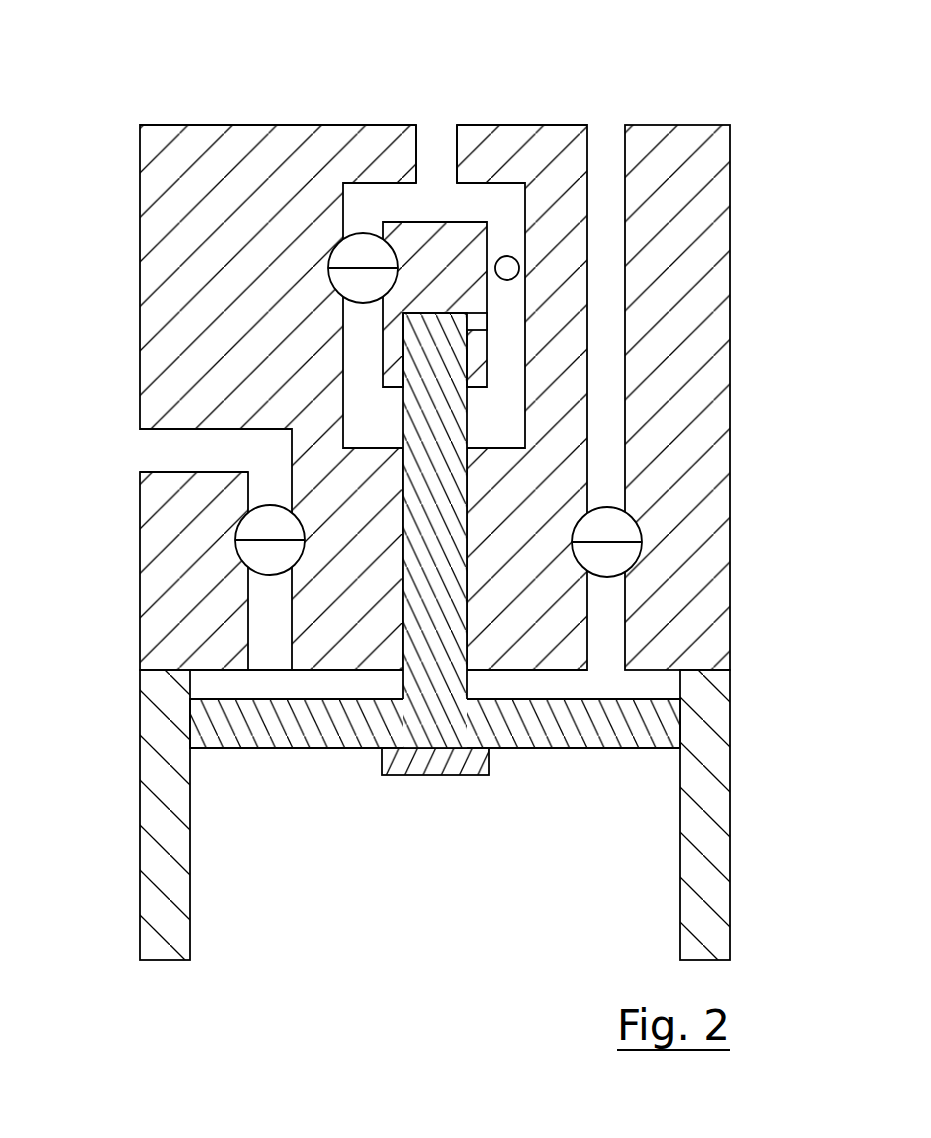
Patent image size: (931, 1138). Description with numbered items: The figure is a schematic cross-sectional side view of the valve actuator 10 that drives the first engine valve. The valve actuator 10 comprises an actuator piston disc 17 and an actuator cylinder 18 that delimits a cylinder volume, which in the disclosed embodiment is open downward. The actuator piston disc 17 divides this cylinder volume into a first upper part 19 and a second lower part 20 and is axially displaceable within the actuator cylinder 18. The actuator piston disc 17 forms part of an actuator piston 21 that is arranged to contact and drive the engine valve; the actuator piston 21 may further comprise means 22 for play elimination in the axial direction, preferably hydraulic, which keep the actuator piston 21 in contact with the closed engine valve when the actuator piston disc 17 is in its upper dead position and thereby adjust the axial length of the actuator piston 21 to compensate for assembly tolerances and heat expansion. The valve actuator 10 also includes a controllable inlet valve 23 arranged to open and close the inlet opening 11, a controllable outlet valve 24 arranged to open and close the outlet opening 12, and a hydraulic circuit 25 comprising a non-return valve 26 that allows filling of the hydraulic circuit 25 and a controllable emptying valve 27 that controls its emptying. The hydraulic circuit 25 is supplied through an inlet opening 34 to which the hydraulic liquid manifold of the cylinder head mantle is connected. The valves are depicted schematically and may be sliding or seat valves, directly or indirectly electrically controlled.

The valve actuator 10 is at (448, 486).
The inlet opening 11 is at (607, 318).
The outlet opening 12 is at (170, 453).
The actuator piston disc 17 is at (652, 722).
The actuator cylinder 18 is at (697, 822).
The first upper part 19 is at (207, 689).
The second lower part 20 is at (215, 774).
The actuator piston 21 is at (485, 589).
The means for play elimination 22 is at (423, 765).
The controllable inlet valve 23 is at (623, 542).
The controllable outlet valve 24 is at (236, 563).
The hydraulic circuit 25 is at (435, 125).
The non-return valve 26 is at (507, 265).
The controllable emptying valve 27 is at (343, 267).
The inlet opening of the hydraulic circuit 34 is at (425, 126).